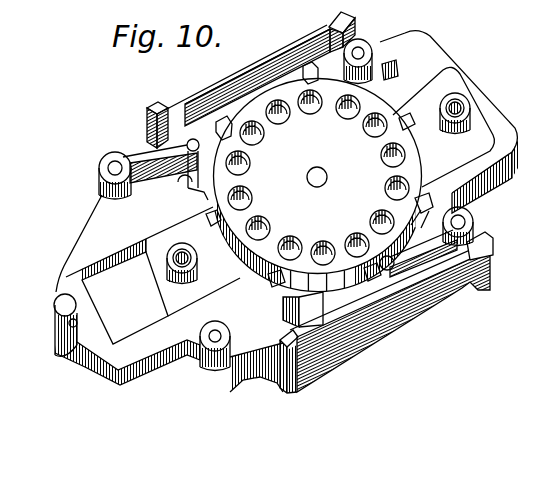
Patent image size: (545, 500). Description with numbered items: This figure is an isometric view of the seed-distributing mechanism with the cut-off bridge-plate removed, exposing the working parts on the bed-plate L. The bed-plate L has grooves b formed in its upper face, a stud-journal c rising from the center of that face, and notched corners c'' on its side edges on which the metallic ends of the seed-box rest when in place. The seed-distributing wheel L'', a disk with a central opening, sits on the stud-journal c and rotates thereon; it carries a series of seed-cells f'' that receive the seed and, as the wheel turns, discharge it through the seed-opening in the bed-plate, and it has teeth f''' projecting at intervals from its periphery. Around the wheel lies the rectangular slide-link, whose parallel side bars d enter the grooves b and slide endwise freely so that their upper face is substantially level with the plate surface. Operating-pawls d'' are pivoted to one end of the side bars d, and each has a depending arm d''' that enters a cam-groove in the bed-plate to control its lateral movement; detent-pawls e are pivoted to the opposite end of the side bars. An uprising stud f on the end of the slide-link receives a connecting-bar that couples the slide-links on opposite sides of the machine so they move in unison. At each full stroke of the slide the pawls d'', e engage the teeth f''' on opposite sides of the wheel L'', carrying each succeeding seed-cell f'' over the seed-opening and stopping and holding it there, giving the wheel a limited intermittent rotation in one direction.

The bed-plate L is at (189, 293).
The seed-distributing wheel L'' is at (318, 185).
The parallel side bars d is at (300, 187).
The operating-pawls d'' is at (286, 211).
The depending arm d''' is at (193, 177).
The grooves b is at (300, 236).
The stud-journal c is at (317, 177).
The notched corners c'' is at (317, 200).
The detent-pawls e is at (333, 205).
The uprising stud f is at (65, 305).
The seed-cells f'' is at (317, 168).
The teeth f''' is at (319, 197).